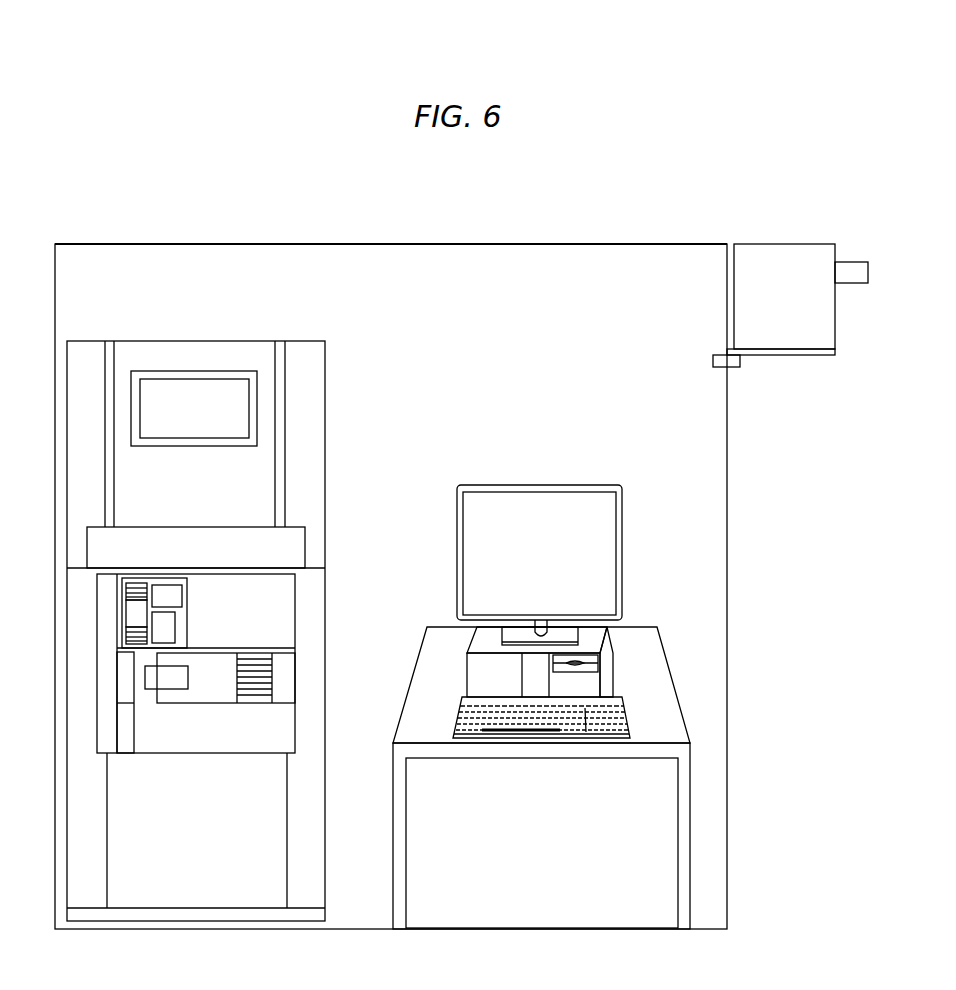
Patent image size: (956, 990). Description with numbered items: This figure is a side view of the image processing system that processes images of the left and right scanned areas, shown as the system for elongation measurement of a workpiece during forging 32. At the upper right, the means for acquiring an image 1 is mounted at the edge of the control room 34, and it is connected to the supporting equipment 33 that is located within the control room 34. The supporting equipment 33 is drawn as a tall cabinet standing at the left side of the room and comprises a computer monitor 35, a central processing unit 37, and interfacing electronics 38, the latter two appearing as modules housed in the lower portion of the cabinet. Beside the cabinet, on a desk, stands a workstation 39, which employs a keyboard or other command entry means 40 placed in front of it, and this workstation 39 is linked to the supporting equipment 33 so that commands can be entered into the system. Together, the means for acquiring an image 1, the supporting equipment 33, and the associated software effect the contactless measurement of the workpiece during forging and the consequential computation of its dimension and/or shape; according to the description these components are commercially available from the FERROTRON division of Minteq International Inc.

The means for acquiring an image 1 is at (775, 244).
The system for elongation measurement of a workpiece during forging 32 is at (658, 194).
The supporting equipment 33 is at (456, 388).
The control room 34 is at (512, 244).
The computer monitor 35 is at (623, 528).
The central processing unit 37 is at (298, 670).
The interfacing electronics 38 is at (280, 611).
The workstation 39 is at (617, 662).
The keyboard or other command entry means 40 is at (623, 710).